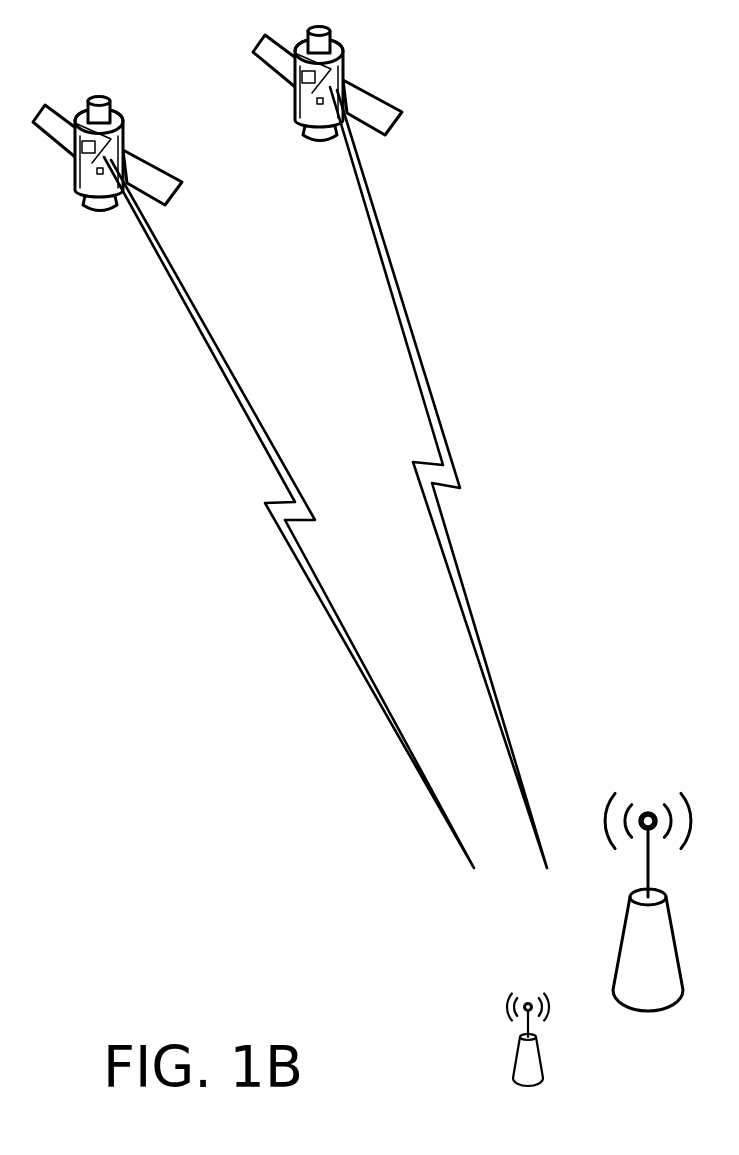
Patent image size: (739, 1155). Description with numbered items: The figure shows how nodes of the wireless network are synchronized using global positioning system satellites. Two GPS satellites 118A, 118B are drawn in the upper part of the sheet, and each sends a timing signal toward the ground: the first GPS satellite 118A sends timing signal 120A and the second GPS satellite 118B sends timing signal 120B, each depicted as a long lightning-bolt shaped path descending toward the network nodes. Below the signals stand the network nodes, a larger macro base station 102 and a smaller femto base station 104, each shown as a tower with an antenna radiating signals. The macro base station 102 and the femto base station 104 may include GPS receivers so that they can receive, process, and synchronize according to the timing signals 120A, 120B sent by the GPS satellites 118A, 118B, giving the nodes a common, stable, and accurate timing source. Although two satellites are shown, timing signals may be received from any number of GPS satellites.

The macro base station 102 is at (648, 921).
The femto base station 104 is at (528, 1057).
The GPS satellite 118A is at (107, 183).
The GPS satellite 118B is at (327, 113).
The timing signal 120A is at (255, 512).
The timing signal 120B is at (477, 477).